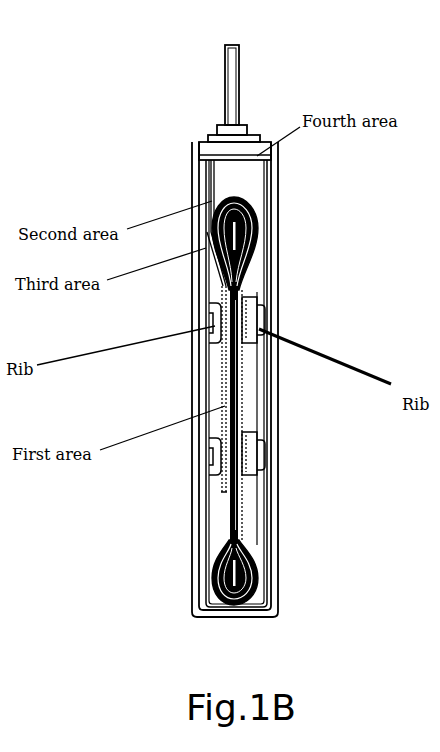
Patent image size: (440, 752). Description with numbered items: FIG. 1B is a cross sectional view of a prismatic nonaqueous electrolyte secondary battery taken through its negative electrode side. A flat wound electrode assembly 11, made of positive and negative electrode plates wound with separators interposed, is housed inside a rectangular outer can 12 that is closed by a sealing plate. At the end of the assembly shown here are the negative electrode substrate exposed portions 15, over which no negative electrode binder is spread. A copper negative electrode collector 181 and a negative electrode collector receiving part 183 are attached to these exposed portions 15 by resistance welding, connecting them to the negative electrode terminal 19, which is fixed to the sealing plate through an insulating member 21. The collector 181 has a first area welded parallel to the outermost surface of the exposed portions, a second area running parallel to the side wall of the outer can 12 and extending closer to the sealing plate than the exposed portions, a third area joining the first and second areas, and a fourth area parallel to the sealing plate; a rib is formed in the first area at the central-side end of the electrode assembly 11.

The flat wound electrode assembly 11 is at (253, 375).
The rectangular outer can 12 is at (274, 523).
The negative electrode substrate exposed portions 15 is at (231, 524).
The negative electrode collector 181 is at (222, 378).
The negative electrode collector receiving part 183 is at (262, 320).
The negative electrode terminal 19 is at (232, 72).
The insulating member 21 is at (208, 139).